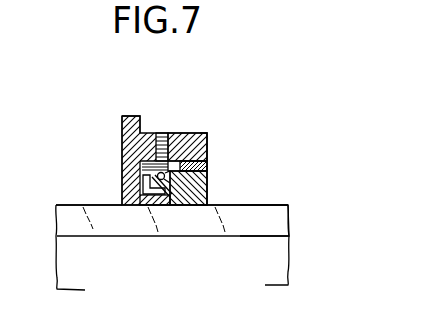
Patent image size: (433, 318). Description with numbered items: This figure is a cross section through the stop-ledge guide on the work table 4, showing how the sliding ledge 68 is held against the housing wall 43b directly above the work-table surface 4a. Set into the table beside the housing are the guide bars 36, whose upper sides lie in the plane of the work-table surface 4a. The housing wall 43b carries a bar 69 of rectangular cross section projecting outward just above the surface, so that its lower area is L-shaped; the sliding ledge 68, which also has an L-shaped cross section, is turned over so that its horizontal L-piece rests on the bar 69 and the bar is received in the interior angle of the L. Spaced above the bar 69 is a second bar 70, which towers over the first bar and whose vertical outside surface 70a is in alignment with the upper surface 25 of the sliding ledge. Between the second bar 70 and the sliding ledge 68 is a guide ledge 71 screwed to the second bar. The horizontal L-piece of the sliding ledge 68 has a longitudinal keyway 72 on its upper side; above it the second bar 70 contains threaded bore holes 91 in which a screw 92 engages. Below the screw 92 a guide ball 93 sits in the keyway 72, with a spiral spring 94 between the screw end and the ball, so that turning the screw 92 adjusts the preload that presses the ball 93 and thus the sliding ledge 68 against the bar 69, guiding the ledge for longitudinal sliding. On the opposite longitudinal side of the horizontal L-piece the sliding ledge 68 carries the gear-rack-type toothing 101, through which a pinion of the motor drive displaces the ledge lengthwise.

The work table 4 is at (57, 225).
The work-table surface 4a is at (68, 203).
The guide bars 36 is at (272, 221).
The housing wall 43b is at (123, 119).
The second bar 70 is at (208, 132).
The vertical outside surface 70a is at (208, 145).
The guide ledge 71 is at (208, 166).
The longitudinal keyway 72 is at (169, 191).
The sliding ledge 68 is at (188, 198).
The bar 69 is at (160, 198).
The threaded bore holes 91 is at (174, 145).
The screw 92 is at (164, 133).
The guide ball 93 is at (148, 164).
The spiral spring 94 is at (152, 170).
The gear-rack-type toothing 101 is at (138, 196).
The upper surface 25 is at (207, 192).